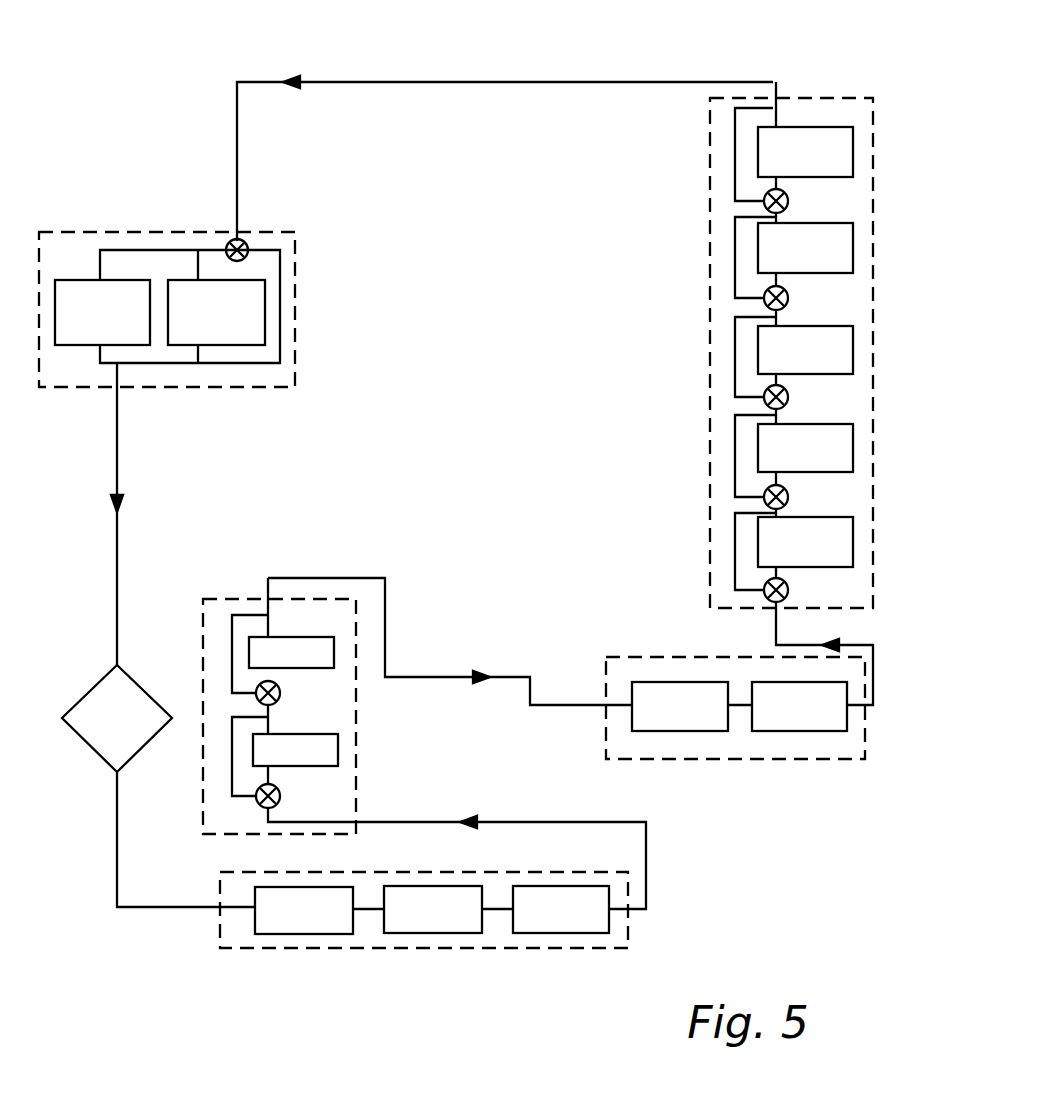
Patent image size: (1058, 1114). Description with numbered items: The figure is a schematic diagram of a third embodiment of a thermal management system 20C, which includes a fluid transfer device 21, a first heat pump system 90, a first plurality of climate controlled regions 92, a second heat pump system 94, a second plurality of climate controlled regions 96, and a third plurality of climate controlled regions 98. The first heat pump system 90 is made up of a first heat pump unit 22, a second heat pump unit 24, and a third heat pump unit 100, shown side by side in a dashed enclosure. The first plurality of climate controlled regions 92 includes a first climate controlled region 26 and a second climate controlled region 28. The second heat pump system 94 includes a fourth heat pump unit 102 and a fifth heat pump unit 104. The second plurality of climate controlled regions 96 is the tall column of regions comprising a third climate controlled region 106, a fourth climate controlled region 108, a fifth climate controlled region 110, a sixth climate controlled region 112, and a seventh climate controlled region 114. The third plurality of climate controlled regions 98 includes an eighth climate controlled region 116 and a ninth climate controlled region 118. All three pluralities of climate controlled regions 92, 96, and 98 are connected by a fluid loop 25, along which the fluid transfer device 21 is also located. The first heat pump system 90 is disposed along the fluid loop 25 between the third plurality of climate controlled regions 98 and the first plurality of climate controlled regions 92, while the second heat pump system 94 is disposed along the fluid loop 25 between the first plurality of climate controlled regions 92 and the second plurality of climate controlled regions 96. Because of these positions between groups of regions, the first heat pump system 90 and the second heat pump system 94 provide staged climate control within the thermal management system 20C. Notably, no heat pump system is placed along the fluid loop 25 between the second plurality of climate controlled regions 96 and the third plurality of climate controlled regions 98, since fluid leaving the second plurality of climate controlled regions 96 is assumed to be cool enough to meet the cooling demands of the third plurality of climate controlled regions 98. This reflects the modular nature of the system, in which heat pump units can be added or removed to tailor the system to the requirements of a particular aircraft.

The thermal management system 20C is at (720, 51).
The fluid loop 25 is at (420, 78).
The third plurality of climate controlled regions 98 is at (302, 337).
The ninth climate controlled region 118 is at (85, 325).
The eighth climate controlled region 116 is at (199, 325).
The fluid transfer device 21 is at (104, 730).
The second plurality of climate controlled regions 96 is at (706, 344).
The seventh climate controlled region 114 is at (788, 165).
The sixth climate controlled region 112 is at (788, 261).
The fifth climate controlled region 110 is at (788, 363).
The fourth climate controlled region 108 is at (788, 461).
The third climate controlled region 106 is at (788, 555).
The second heat pump system 94 is at (651, 653).
The fourth heat pump unit 102 is at (663, 719).
The fifth heat pump unit 104 is at (783, 719).
The first plurality of climate controlled regions 92 is at (239, 594).
The second climate controlled region 28 is at (277, 665).
The first climate controlled region 26 is at (281, 763).
The first heat pump system 90 is at (468, 952).
The first heat pump unit 22 is at (291, 923).
The second heat pump unit 24 is at (420, 922).
The third heat pump unit 100 is at (544, 922).